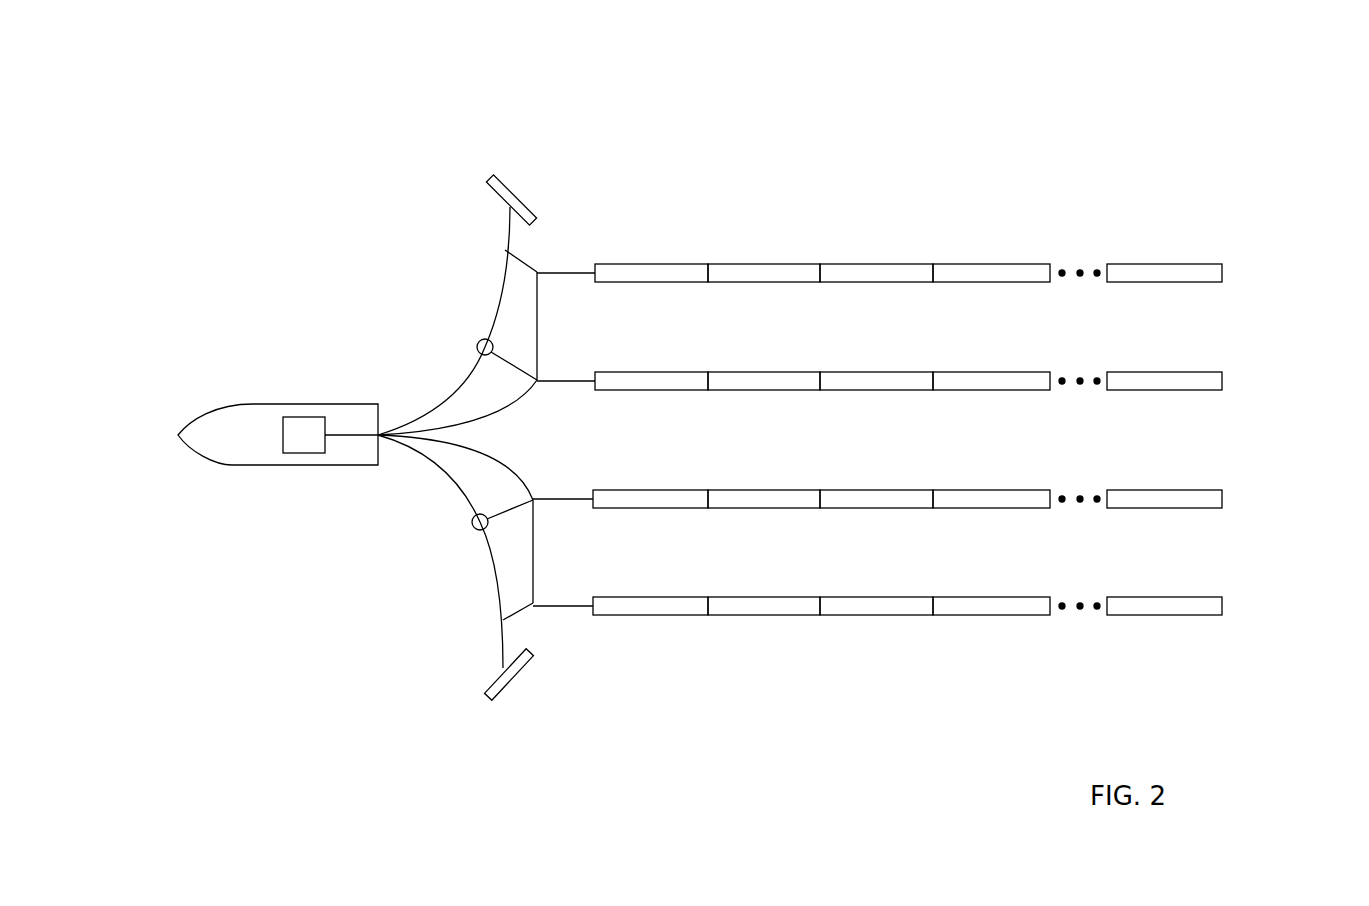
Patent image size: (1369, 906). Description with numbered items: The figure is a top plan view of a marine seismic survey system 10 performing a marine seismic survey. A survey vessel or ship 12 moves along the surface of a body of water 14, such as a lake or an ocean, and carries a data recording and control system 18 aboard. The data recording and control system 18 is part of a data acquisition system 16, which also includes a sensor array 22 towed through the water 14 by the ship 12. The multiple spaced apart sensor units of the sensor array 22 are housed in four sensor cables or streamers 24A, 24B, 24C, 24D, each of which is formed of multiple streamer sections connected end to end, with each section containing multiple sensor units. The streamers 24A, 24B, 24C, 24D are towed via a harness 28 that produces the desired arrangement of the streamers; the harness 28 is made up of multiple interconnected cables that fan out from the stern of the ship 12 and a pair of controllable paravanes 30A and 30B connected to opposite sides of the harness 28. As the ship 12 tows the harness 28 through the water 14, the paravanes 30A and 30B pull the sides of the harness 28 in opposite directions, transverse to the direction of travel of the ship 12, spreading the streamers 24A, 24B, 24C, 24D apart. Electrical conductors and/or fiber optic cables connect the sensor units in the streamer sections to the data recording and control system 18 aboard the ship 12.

The marine seismic survey system 10 is at (880, 92).
The survey vessel 12 is at (249, 404).
The body of water 14 is at (365, 551).
The data acquisition system 16 is at (676, 152).
The data recording and control system 18 is at (305, 417).
The sensor array 22 is at (813, 225).
The streamer 24A is at (552, 605).
The streamer 24B is at (552, 498).
The streamer 24C is at (552, 380).
The streamer 24D is at (552, 272).
The harness 28 is at (430, 322).
The paravane 30A is at (513, 676).
The paravane 30B is at (517, 195).